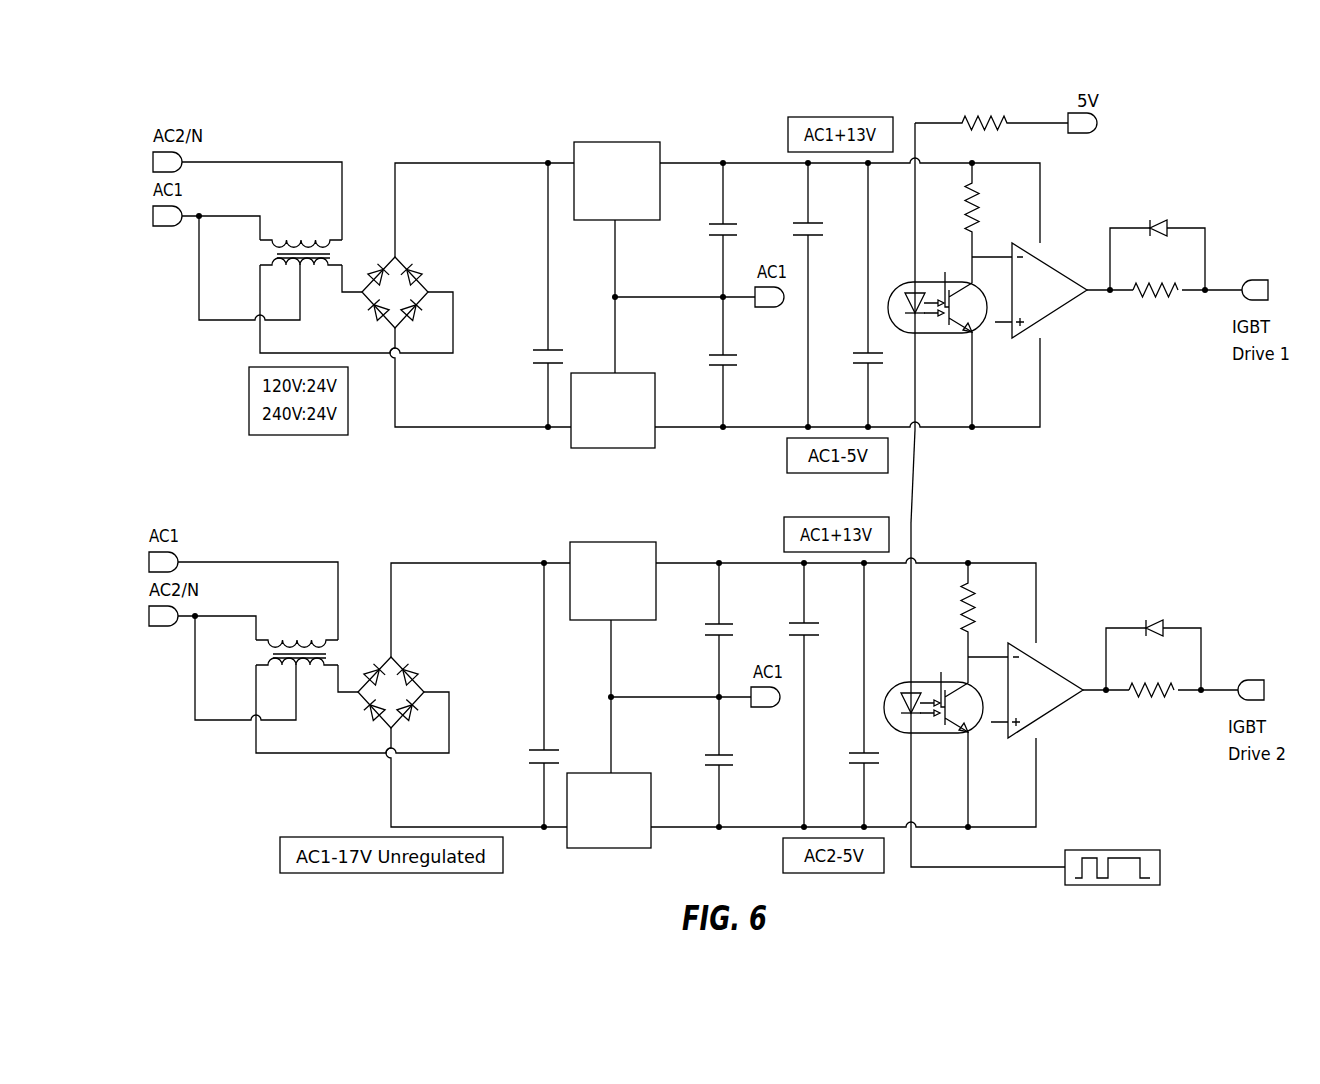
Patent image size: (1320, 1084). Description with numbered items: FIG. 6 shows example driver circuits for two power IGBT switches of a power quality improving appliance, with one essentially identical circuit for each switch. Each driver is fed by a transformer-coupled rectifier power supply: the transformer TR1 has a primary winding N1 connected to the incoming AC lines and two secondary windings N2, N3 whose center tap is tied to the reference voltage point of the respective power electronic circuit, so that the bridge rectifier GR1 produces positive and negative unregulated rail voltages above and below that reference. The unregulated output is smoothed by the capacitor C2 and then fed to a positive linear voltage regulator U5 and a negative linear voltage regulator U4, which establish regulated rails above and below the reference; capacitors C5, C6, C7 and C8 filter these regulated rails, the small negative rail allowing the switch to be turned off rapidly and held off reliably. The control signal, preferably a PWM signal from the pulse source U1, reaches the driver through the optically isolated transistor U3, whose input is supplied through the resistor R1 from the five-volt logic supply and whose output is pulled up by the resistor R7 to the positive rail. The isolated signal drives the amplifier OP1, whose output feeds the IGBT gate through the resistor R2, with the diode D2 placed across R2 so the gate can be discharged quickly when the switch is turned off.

The transformer TR1 is at (279, 452).
The transformer primary winding N1 is at (299, 429).
The transformer secondary winding N2 is at (278, 476).
The transformer secondary winding N3 is at (319, 476).
The bridge rectifier 1N1183 GR1 is at (434, 480).
The capacitor 47 microfarad C2 is at (513, 495).
The voltage regulator LM7812C U5 is at (614, 366).
The voltage regulator LM79L05C U4 is at (612, 624).
The capacitor 1 microfarad C5 is at (695, 430).
The capacitor 1 microfarad C6 is at (695, 562).
The capacitor 47 microfarad C7 is at (819, 495).
The capacitor 100n C8 is at (849, 495).
The resistor 470 ohm R1 is at (991, 110).
The resistor 47k R7 is at (952, 410).
The optocoupler 4N33 U3 is at (1000, 524).
The operational amplifier IOPAMP OP1 is at (1075, 493).
The resistor 5 ohm R2 is at (1153, 475).
The diode 1N1183 D2 is at (1156, 440).
The pulse generator U1 is at (1112, 851).